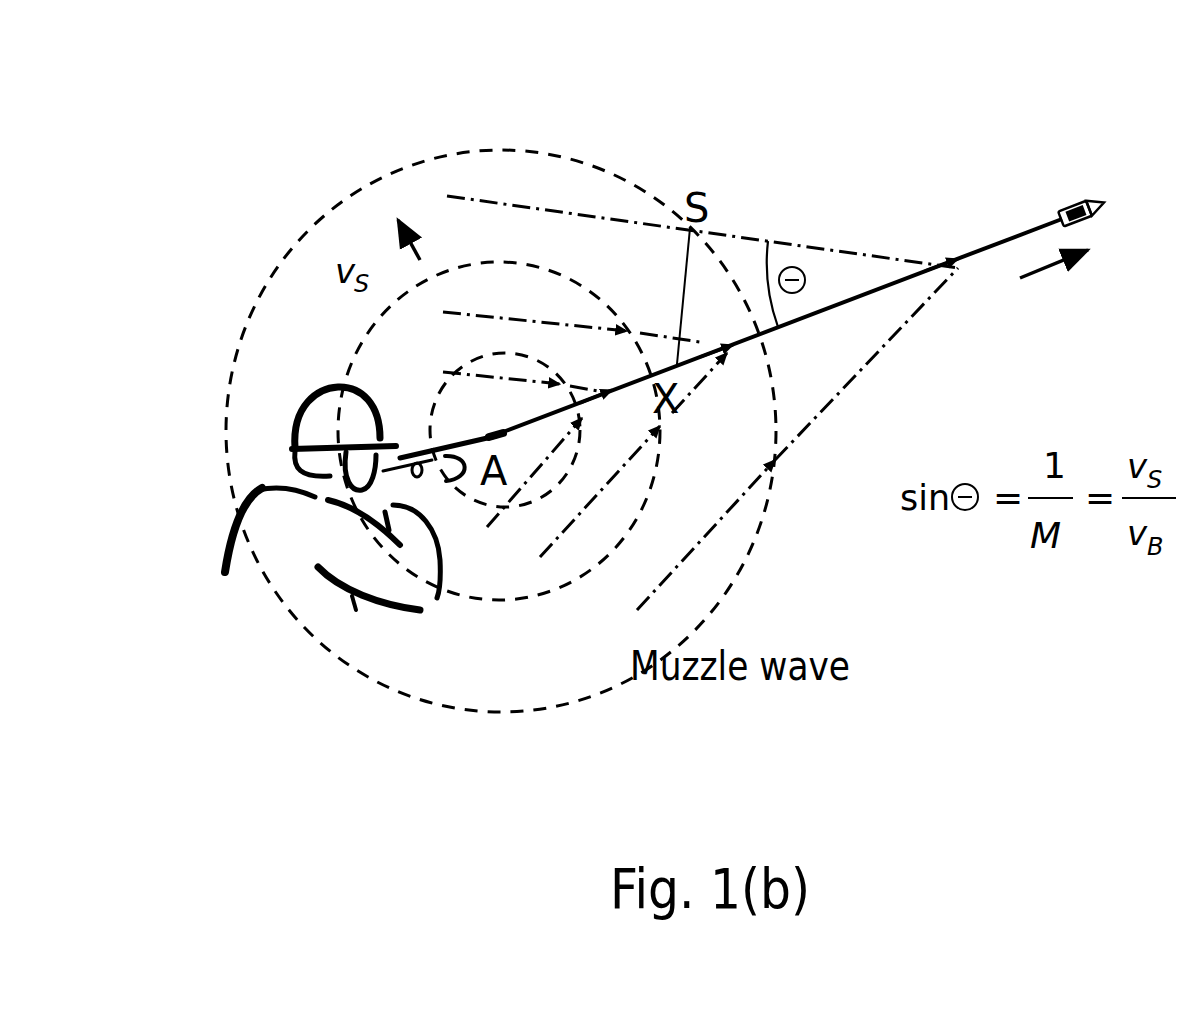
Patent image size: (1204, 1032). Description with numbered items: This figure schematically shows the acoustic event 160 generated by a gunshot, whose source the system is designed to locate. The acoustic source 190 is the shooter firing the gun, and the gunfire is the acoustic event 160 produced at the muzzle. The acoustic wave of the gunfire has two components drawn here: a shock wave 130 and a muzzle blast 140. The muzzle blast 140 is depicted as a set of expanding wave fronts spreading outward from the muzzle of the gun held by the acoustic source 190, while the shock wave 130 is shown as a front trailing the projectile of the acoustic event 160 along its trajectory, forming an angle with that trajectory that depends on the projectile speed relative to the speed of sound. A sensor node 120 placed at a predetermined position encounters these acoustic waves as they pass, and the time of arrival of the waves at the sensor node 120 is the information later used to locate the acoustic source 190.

The sensor node 120 is at (687, 222).
The shock wave 130 is at (810, 425).
The muzzle blast 140 is at (502, 603).
The acoustic event 160 is at (1028, 232).
The acoustic source 190 is at (478, 404).